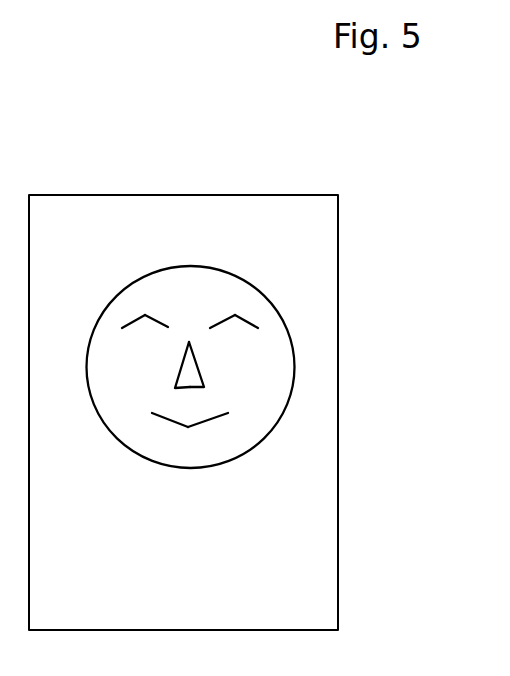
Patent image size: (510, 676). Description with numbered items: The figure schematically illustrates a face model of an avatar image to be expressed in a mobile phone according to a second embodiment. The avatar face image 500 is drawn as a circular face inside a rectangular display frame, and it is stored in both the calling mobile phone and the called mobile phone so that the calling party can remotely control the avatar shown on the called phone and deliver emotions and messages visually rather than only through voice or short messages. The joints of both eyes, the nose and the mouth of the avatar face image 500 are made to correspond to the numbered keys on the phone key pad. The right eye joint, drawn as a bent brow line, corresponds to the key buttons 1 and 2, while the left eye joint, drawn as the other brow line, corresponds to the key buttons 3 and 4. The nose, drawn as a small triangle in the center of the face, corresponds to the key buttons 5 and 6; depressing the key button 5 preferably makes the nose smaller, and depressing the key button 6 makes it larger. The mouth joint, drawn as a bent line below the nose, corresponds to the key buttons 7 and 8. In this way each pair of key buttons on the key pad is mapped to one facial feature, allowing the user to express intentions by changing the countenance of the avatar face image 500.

The avatar face image 500 is at (338, 410).
The key button 1 is at (133, 314).
The key button 2 is at (158, 313).
The key button 3 is at (222, 314).
The key button 4 is at (248, 314).
The key button 5 is at (177, 365).
The key button 6 is at (201, 364).
The key button 7 is at (170, 426).
The key button 8 is at (208, 426).